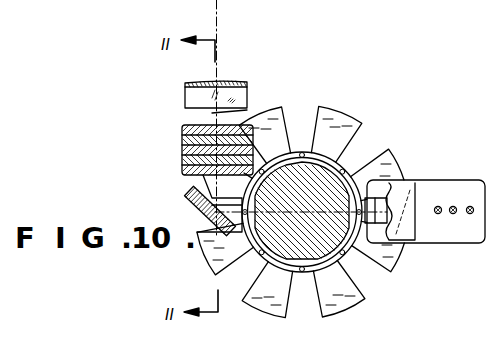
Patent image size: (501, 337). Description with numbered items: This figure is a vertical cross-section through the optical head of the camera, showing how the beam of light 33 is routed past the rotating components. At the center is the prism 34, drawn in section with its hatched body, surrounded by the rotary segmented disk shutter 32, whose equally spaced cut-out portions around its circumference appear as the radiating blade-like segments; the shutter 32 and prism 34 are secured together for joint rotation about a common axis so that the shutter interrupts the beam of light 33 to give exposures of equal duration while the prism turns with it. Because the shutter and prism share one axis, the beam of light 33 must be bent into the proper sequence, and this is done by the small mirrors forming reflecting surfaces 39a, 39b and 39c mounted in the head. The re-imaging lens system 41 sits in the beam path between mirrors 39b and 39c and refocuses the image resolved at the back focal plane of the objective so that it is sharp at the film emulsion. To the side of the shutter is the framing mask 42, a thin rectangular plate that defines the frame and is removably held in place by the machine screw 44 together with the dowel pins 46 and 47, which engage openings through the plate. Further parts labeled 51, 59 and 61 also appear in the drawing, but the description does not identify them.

The rotary segmented disk shutter 32 is at (343, 114).
The beam of light 33 is at (212, 113).
The prism 34 is at (329, 181).
The reflecting surface 39a is at (404, 196).
The reflecting surface 39b is at (196, 199).
The reflecting surface 39c is at (190, 97).
The re-imaging lens system 41 is at (183, 148).
The framing mask 42 is at (448, 243).
The machine screw 44 is at (454, 206).
The dowel pin 46 is at (441, 243).
The dowel pin 47 is at (466, 214).
The member 51 is at (292, 334).
The member 59 is at (381, 321).
The member 61 is at (420, 336).